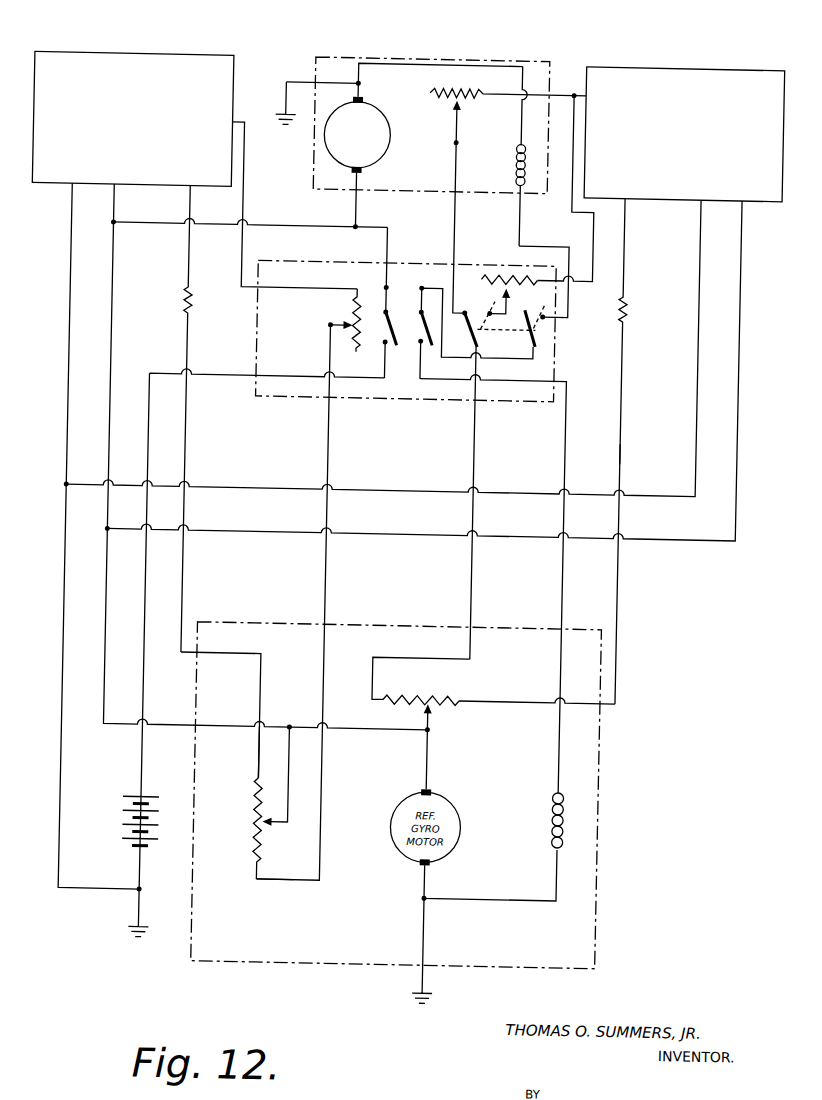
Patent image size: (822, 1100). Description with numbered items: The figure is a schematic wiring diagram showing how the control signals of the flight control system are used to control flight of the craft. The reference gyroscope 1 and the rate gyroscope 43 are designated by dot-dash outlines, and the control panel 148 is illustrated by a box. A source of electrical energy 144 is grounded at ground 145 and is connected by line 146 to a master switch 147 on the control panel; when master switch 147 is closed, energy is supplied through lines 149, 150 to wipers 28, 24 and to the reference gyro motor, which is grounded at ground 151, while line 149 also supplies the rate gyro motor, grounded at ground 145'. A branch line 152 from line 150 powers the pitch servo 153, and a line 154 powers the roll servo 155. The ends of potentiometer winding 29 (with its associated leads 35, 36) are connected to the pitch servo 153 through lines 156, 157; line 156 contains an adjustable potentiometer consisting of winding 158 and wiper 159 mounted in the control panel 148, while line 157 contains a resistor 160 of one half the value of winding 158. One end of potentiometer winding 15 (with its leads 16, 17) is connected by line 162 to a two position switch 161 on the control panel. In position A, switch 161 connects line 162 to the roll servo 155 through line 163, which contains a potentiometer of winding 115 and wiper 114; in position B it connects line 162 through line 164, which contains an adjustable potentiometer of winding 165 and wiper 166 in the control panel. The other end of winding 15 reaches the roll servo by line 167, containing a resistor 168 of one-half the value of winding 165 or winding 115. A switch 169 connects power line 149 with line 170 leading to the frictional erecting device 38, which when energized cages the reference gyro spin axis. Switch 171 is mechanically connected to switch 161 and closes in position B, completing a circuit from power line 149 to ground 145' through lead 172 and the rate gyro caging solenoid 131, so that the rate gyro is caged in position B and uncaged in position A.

The reference gyroscope 1 is at (603, 888).
The potentiometer winding 15 is at (431, 697).
The potentiometer lead 16 is at (375, 679).
The potentiometer lead 17 is at (503, 699).
The wiper 24 is at (437, 721).
The wiper 28 is at (294, 829).
The potentiometer winding 29 is at (256, 827).
The lead 35 is at (262, 757).
The lead 36 is at (283, 882).
The frictional erecting device 38 is at (552, 823).
The rate gyroscope 43 is at (330, 53).
The wiper 114 is at (449, 131).
The winding 115 is at (436, 106).
The rate gyro caging solenoid 131 is at (507, 166).
The source of electrical energy 144 is at (127, 820).
The ground 145 is at (110, 920).
The ground 145' is at (271, 102).
The line 146 is at (205, 381).
The master switch 147 is at (387, 328).
The control panel 148 is at (392, 401).
The line 149 is at (256, 228).
The line 150 is at (108, 343).
The ground 151 is at (417, 1003).
The branch line 152 is at (108, 211).
The pitch servo 153 is at (143, 62).
The line 154 is at (246, 531).
The roll servo 155 is at (662, 68).
The line 156 is at (328, 588).
The line 157 is at (185, 576).
The winding 158 is at (347, 308).
The wiper 159 is at (325, 331).
The resistor 160 is at (178, 306).
The two position switch 161 is at (466, 323).
The line 162 is at (477, 444).
The line 163 is at (449, 221).
The line 164 is at (587, 235).
The winding 165 is at (508, 272).
The wiper 166 is at (503, 306).
The line 167 is at (620, 445).
The resistor 168 is at (623, 300).
The switch 169 is at (413, 325).
The line 170 is at (441, 384).
The switch 171 is at (517, 320).
The lead 172 is at (514, 221).